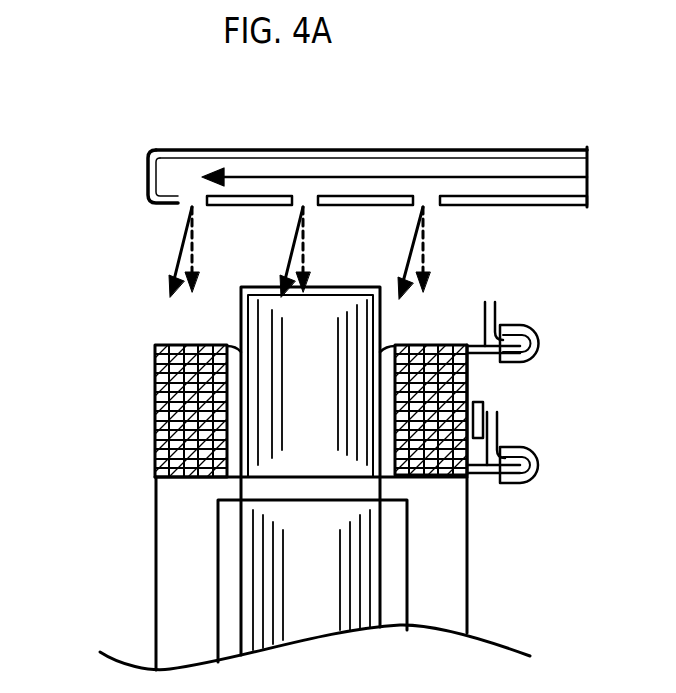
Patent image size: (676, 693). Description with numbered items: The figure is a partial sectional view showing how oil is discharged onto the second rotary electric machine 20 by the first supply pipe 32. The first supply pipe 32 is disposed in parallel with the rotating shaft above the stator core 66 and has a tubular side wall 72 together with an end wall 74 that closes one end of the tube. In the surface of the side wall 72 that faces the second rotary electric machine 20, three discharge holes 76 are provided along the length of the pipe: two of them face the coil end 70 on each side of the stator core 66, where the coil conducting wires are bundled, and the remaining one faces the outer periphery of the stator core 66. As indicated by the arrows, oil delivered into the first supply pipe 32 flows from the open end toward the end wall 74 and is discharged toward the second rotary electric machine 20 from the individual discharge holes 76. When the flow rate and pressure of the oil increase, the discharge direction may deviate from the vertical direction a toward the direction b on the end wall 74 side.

The second rotary electric machine 20 is at (112, 332).
The first supply pipe 32 is at (315, 143).
The stator core 66 is at (350, 337).
The coil end 70 is at (155, 420).
The side wall 72 is at (496, 148).
The end wall 74 is at (143, 188).
The discharge hole 76 is at (192, 202).